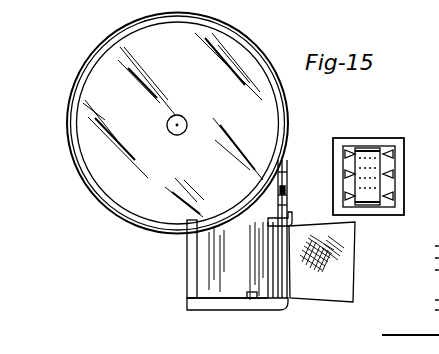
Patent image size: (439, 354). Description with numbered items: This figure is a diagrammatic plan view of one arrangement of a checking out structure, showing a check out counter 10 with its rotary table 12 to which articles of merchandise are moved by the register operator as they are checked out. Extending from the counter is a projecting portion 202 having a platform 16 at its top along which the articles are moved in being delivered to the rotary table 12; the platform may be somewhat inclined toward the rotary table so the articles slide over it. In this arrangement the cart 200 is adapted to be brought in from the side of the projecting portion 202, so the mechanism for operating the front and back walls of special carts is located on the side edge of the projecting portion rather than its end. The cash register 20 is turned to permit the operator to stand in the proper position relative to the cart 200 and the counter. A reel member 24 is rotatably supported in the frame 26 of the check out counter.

The check out counter 10 is at (272, 28).
The rotary table 12 is at (253, 98).
The platform 16 is at (238, 290).
The cash register 20 is at (380, 148).
The reel member 24 is at (290, 232).
The frame 26 is at (187, 255).
The cart 200 is at (352, 292).
The projecting portion 202 is at (185, 283).